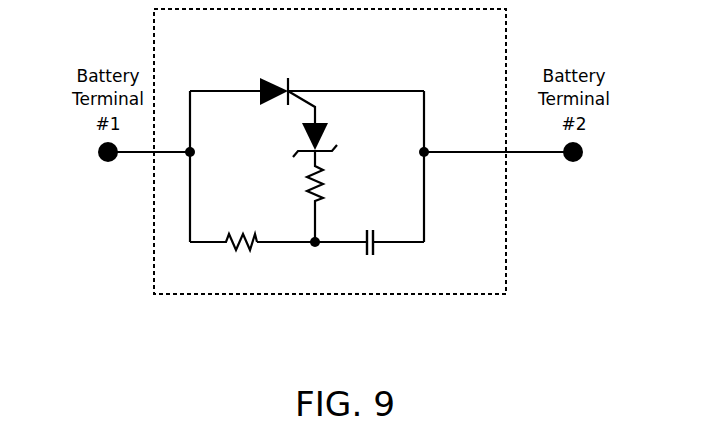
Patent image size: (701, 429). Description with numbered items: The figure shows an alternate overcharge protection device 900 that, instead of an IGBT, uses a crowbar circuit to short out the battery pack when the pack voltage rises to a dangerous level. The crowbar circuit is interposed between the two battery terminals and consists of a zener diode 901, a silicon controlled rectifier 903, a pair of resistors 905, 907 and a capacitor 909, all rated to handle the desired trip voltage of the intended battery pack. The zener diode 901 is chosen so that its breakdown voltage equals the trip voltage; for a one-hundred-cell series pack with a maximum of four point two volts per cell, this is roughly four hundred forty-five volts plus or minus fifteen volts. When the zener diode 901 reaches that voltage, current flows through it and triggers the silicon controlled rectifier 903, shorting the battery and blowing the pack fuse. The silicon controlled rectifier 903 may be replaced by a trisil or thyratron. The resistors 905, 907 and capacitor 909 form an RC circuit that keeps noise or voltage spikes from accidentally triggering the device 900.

The overcharge protection device 900 is at (461, 296).
The zener diode 901 is at (328, 123).
The silicon controlled rectifier 903 is at (265, 78).
The resistor 905 is at (237, 256).
The resistor 907 is at (332, 184).
The capacitor 909 is at (374, 259).